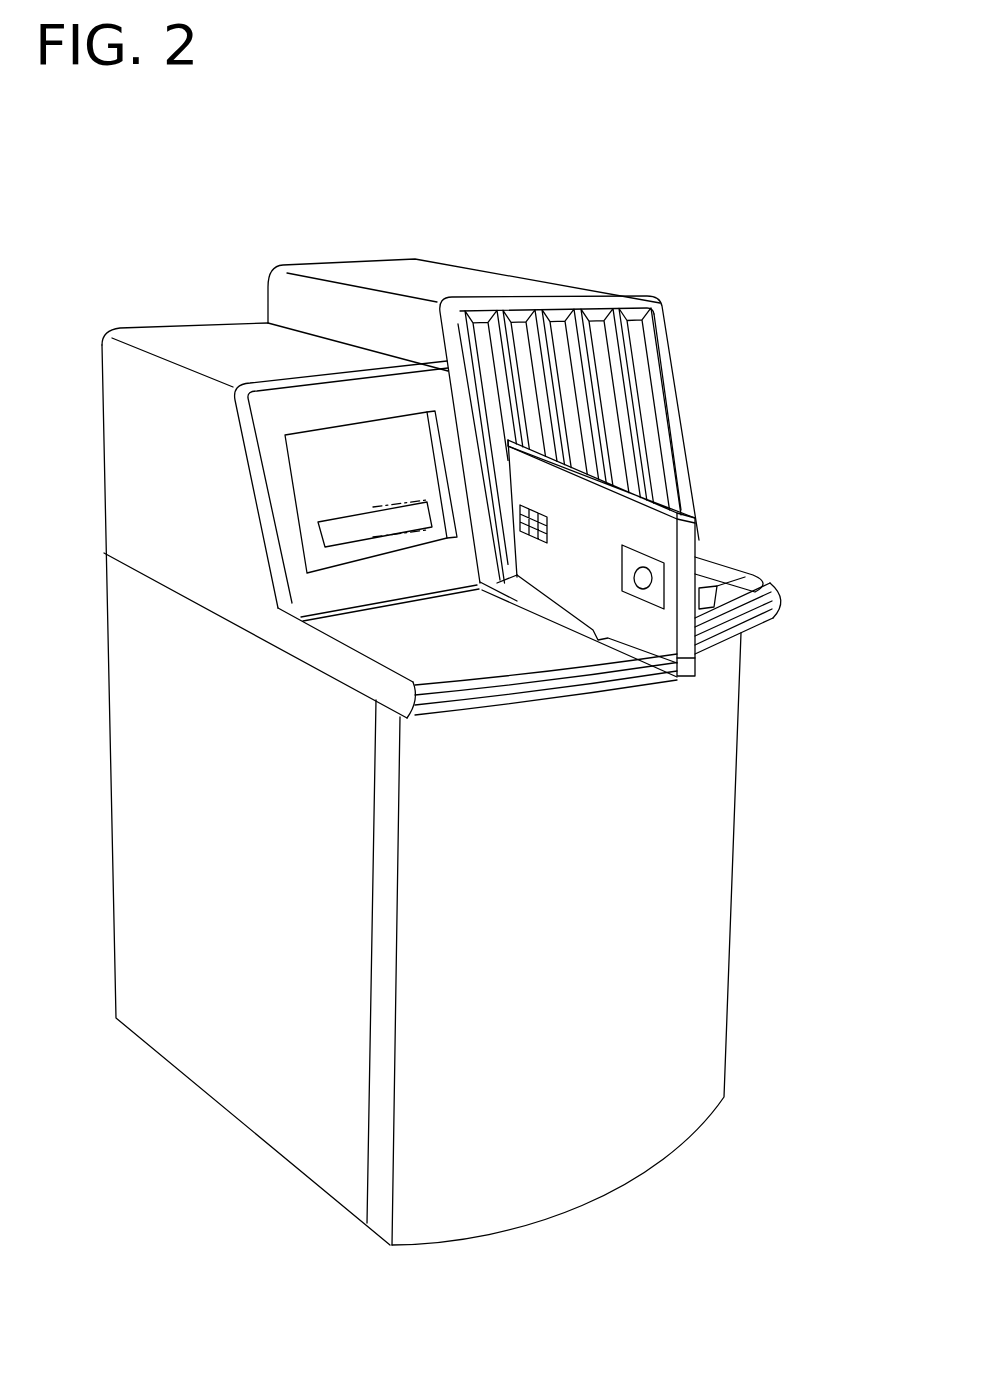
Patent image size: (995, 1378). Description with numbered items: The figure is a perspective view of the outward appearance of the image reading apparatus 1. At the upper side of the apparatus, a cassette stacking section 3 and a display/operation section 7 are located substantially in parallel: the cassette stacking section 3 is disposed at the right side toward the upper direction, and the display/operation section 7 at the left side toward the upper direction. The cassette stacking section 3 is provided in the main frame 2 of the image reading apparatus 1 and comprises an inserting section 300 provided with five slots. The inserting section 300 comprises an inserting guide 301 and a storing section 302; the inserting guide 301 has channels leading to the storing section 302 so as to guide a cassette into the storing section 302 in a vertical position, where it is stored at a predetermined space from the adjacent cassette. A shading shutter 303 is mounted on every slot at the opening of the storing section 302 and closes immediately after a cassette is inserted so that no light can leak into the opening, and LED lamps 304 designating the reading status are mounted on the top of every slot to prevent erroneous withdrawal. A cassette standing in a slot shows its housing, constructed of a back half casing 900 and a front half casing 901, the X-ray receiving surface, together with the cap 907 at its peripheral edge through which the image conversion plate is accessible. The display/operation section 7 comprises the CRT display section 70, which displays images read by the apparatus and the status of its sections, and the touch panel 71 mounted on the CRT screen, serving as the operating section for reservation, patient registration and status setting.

The image reading apparatus 1 is at (405, 175).
The main frame 2 is at (694, 903).
The cassette stacking section 3 is at (672, 350).
The display/operation section 7 is at (312, 495).
The CRT display section 70 is at (307, 450).
The touch panel 71 is at (382, 505).
The inserting section 300 is at (688, 413).
The inserting guide 301 is at (737, 584).
The storing section 302 is at (652, 470).
The shading shutter 303 is at (652, 320).
The LED lamps 304 is at (485, 312).
The back half casing 900 is at (667, 672).
The front half casing 901 is at (717, 652).
The cap 907 is at (633, 678).